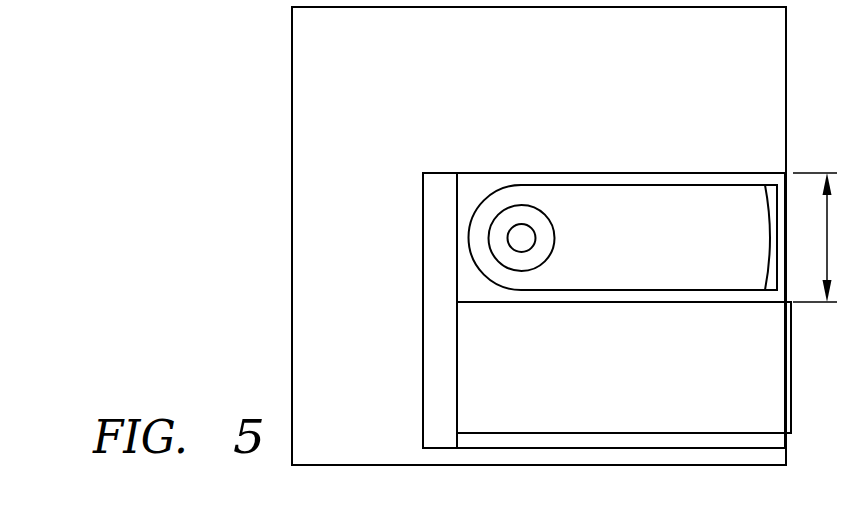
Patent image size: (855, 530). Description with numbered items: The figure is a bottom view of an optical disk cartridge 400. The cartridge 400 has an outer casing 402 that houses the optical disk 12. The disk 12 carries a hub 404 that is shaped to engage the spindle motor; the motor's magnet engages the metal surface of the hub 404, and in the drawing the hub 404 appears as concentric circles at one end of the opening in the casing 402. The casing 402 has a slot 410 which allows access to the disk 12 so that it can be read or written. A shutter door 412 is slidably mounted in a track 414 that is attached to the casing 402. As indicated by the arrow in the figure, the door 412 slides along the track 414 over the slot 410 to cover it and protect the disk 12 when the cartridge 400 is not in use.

The optical disk cartridge 400 is at (240, 296).
The outer casing 402 is at (515, 107).
The hub 404 is at (528, 210).
The slot 410 is at (765, 185).
The shutter door 412 is at (648, 385).
The track 414 is at (430, 309).
The optical disk 12 is at (668, 251).